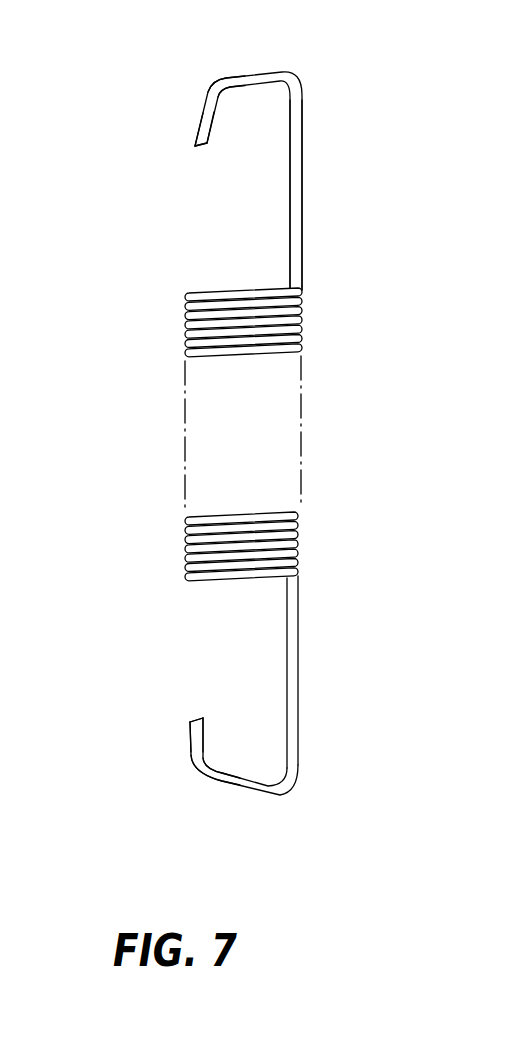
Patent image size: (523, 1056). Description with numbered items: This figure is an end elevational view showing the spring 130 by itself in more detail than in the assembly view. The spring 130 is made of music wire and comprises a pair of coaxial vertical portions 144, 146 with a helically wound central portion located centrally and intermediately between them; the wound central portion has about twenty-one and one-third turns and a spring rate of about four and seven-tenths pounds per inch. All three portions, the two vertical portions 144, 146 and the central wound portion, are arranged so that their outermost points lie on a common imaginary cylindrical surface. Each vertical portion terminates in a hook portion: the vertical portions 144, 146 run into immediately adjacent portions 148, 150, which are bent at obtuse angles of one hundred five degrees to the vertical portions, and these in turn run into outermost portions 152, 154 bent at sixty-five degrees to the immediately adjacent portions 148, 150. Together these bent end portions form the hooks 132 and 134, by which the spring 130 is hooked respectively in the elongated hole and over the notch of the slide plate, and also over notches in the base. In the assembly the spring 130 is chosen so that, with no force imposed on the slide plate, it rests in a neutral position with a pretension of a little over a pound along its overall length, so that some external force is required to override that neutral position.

The spring 130 is at (212, 443).
The hook 132 is at (217, 153).
The hook 134 is at (212, 793).
The vertical portion 144 is at (303, 225).
The vertical portion 146 is at (298, 720).
The immediately adjacent portion 148 is at (237, 78).
The immediately adjacent portion 150 is at (220, 783).
The outermost portion 152 is at (197, 125).
The outermost portion 154 is at (193, 750).